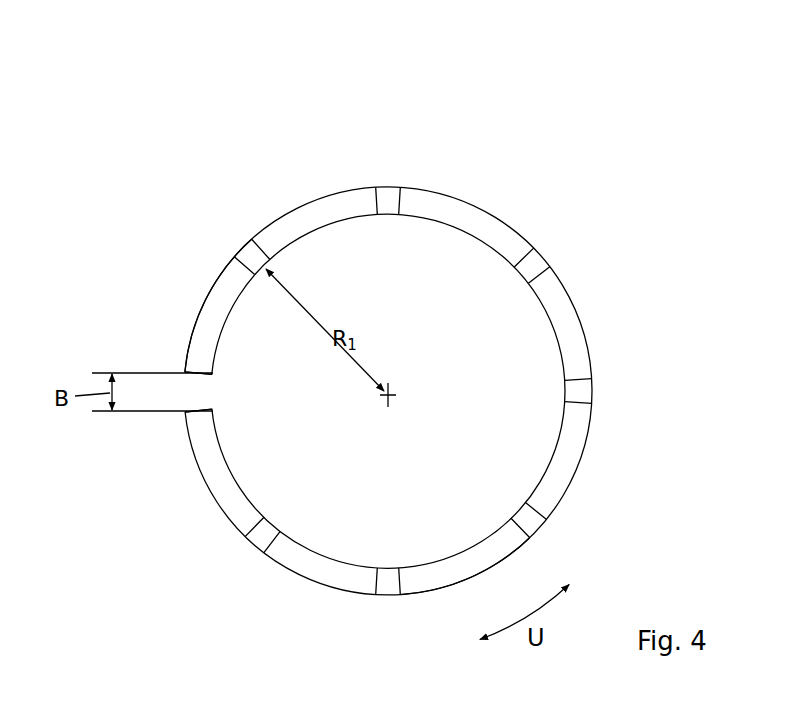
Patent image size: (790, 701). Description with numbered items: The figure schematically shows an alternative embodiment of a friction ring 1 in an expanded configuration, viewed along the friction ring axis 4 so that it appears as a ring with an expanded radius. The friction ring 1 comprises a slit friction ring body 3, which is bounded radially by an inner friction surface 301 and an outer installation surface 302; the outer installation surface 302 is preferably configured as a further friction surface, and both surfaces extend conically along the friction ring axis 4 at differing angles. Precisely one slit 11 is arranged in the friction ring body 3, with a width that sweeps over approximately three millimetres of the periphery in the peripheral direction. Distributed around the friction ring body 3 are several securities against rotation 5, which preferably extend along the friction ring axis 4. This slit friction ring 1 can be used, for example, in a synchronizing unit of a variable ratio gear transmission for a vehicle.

The friction ring 1 is at (388, 98).
The friction ring body 3 is at (493, 213).
The friction ring axis 4 is at (388, 395).
The security against rotation 5 is at (389, 203).
The slit 11 is at (195, 392).
The inner friction surface 301 is at (432, 562).
The outer installation surface 302 is at (281, 214).